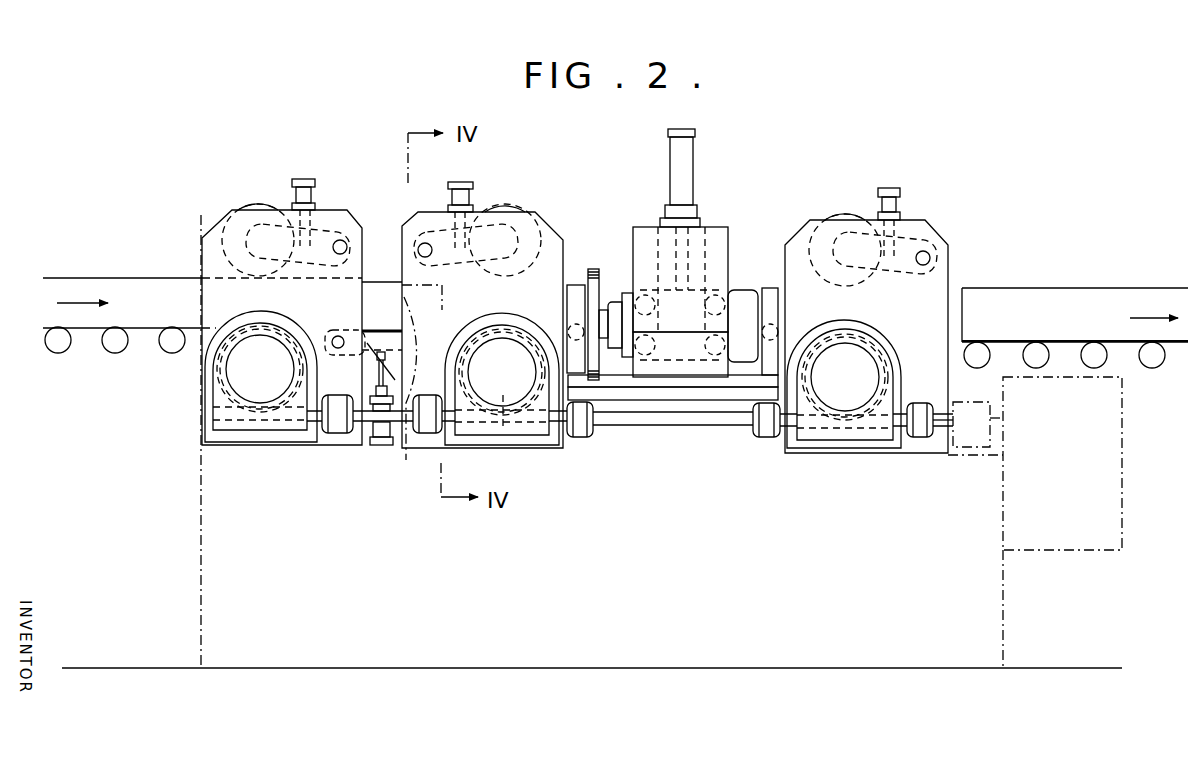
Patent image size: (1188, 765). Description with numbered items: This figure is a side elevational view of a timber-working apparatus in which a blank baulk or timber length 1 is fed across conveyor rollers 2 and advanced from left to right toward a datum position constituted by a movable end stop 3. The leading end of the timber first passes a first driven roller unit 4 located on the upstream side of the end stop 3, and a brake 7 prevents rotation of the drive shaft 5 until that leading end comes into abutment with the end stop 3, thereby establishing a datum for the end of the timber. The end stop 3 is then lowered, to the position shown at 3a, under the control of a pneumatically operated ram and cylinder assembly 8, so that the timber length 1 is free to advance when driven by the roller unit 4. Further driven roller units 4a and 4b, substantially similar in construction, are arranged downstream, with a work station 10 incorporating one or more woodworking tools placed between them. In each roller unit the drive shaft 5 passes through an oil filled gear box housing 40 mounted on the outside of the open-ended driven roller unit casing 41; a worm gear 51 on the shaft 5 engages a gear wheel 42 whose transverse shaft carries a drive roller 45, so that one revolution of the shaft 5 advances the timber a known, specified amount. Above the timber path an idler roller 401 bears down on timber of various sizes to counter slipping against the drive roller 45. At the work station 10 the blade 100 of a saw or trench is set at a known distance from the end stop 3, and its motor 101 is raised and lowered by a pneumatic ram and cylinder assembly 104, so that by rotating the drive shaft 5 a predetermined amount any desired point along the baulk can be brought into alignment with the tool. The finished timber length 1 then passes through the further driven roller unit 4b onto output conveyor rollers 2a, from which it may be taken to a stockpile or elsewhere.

The timber length 1 is at (157, 278).
The conveyor rollers 2 is at (58, 348).
The output conveyor rollers 2a is at (977, 360).
The movable end stop 3 is at (383, 330).
The lowered position of end stop 3a is at (406, 460).
The first driven roller unit 4 is at (259, 198).
The roller unit 4a is at (505, 205).
The further drive roller unit 4b is at (905, 200).
The drive shaft 5 is at (672, 427).
The brake 7 is at (1027, 463).
The pneumatically operated ram and cylinder assembly 8 is at (370, 432).
The work station 10 is at (722, 162).
The gear box housing 40 is at (262, 432).
The driven roller unit casing 41 is at (947, 230).
The gear wheel 42 is at (770, 437).
The drive roller 45 is at (504, 430).
The worm gear 51 is at (838, 440).
The blade 100 is at (594, 269).
The motor 101 is at (745, 290).
The pneumatic ram and cylinder assembly 104 is at (678, 172).
The idler roller 401 is at (836, 222).